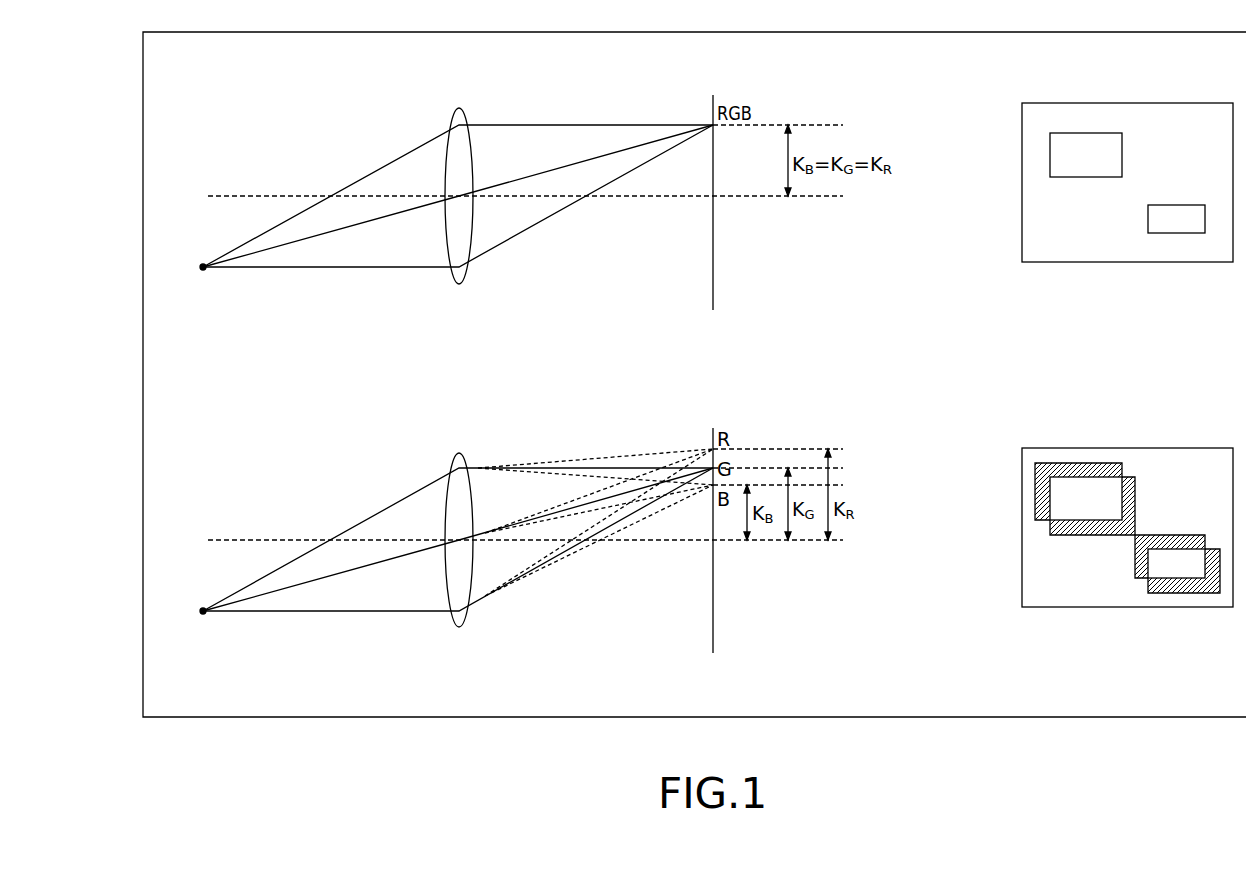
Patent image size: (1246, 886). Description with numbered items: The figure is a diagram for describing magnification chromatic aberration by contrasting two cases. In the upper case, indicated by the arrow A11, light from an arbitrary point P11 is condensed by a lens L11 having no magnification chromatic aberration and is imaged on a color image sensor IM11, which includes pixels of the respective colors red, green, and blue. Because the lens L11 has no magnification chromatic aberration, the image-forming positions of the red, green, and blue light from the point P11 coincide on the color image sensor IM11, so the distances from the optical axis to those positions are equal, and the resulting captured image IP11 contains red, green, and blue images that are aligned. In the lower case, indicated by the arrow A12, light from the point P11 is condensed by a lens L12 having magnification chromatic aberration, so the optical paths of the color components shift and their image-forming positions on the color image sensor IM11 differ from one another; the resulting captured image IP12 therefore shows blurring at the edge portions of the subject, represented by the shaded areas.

The lens having no magnification chromatic aberration L11 is at (459, 107).
The lens having magnification chromatic aberration L12 is at (459, 452).
The point P11 is at (203, 271).
The arrow A11 is at (412, 295).
The arrow A12 is at (412, 637).
The color image sensor IM11 is at (713, 265).
The captured image IP11 is at (1132, 103).
The captured image IP12 is at (1132, 448).